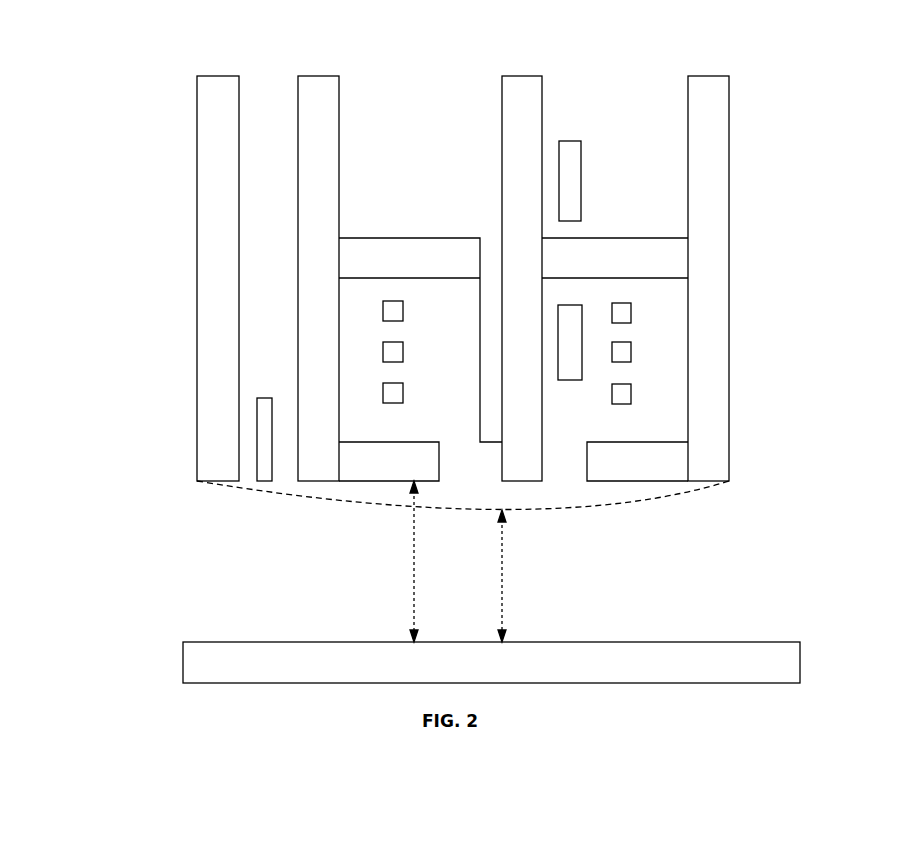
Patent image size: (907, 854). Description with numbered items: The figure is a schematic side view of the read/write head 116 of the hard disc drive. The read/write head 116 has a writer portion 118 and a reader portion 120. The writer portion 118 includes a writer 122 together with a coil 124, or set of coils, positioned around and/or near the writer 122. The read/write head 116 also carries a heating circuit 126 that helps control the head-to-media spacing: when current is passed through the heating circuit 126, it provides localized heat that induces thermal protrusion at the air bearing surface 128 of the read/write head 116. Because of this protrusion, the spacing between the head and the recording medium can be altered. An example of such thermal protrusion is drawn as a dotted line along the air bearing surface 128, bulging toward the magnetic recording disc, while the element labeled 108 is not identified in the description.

The substrate 108 is at (491, 662).
The read/write head 116 is at (112, 85).
The writer portion 118 is at (565, 527).
The reader portion 120 is at (319, 535).
The writer 122 is at (518, 96).
The coil 124 is at (618, 347).
The heating circuit 126 is at (574, 142).
The air bearing surface 128 is at (617, 482).